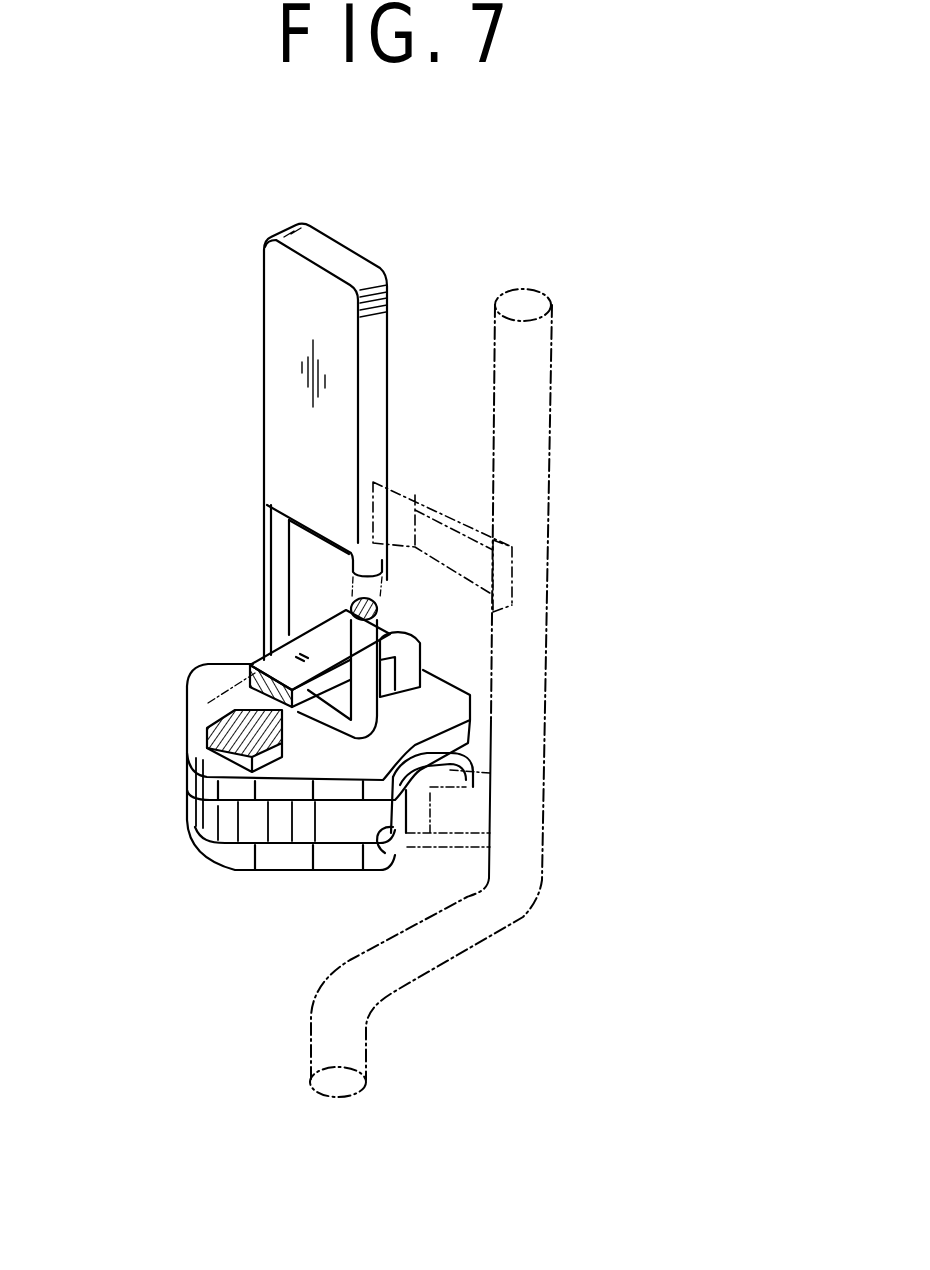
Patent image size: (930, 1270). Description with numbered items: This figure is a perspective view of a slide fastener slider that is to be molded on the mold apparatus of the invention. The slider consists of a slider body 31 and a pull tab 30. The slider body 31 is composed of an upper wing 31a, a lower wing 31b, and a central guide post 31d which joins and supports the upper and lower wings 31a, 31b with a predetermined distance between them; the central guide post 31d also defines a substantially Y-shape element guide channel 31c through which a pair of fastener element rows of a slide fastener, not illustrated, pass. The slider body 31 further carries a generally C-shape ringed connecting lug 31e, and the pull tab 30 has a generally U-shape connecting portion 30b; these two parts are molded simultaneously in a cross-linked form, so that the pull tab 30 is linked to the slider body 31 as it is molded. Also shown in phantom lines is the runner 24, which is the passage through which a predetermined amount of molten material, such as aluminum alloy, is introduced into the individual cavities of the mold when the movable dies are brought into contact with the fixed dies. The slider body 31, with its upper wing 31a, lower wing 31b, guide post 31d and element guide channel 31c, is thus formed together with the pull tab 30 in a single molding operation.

The runner 24 is at (535, 425).
The pull tab 30 is at (370, 333).
The connecting portion 30b is at (263, 577).
The slider body 31 is at (227, 872).
The upper wing 31a is at (357, 760).
The lower wing 31b is at (403, 773).
The element guide channel 31c is at (313, 830).
The central guide post 31d is at (223, 817).
The ringed connecting lug 31e is at (257, 660).